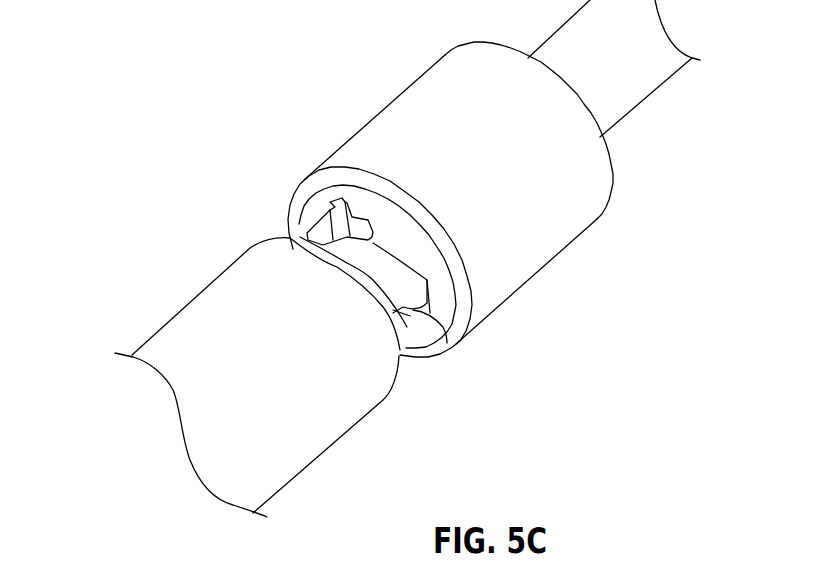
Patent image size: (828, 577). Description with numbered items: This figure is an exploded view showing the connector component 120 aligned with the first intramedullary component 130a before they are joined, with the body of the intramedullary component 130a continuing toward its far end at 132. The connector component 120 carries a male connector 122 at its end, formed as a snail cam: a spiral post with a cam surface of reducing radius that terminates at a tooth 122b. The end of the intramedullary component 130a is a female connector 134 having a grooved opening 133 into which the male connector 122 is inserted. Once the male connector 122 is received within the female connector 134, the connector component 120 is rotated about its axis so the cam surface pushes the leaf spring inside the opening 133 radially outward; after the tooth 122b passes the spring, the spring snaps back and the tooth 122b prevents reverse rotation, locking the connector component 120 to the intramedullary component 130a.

The connector component 120 is at (142, 317).
The male connector 122 is at (417, 322).
The tooth 122b is at (305, 215).
The first intramedullary component 130a is at (395, 234).
The second shaft 132 is at (624, 90).
The grooved opening 133 is at (447, 345).
The female connector 134 is at (513, 273).